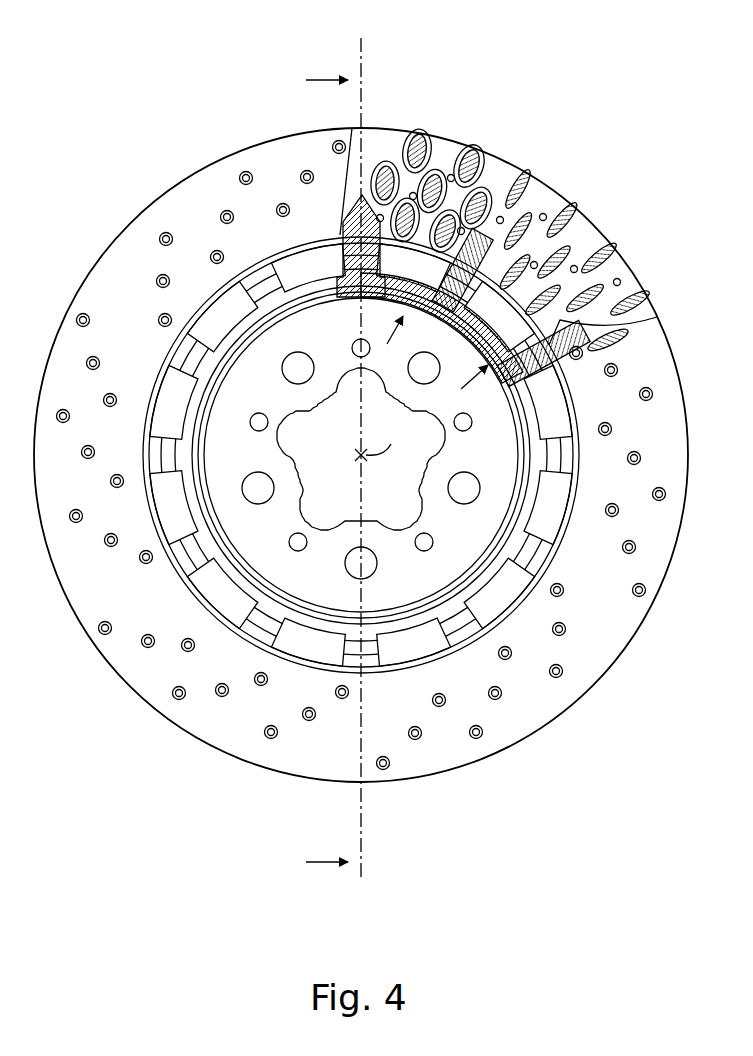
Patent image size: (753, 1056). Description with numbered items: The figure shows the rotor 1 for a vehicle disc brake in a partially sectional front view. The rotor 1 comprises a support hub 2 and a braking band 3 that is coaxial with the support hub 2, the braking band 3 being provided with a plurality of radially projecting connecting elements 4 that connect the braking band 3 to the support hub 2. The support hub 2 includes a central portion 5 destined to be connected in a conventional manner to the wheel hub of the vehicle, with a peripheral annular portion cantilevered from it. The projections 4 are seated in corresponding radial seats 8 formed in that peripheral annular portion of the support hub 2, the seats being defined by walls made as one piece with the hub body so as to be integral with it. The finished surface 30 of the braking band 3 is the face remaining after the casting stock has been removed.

The rotor 1 is at (604, 82).
The support hub 2 is at (265, 560).
The braking band 3 is at (218, 718).
The surface of the braking band 30 is at (621, 594).
The connecting elements 4 is at (578, 268).
The central portion 5 is at (416, 594).
The radial seats 8 is at (447, 307).